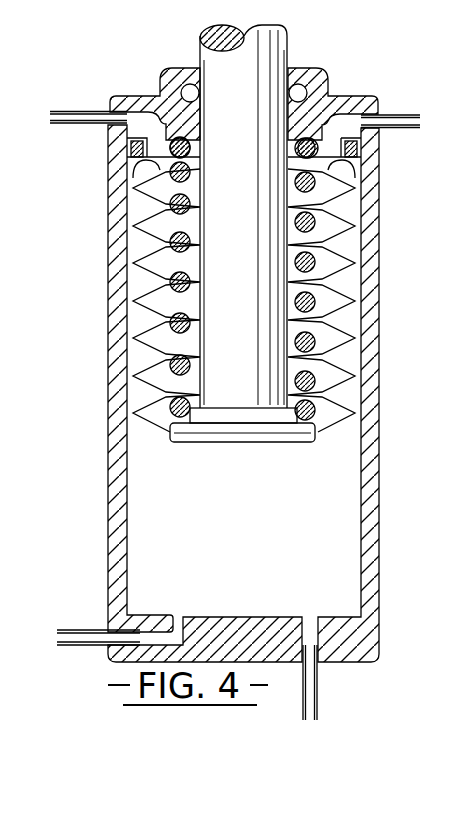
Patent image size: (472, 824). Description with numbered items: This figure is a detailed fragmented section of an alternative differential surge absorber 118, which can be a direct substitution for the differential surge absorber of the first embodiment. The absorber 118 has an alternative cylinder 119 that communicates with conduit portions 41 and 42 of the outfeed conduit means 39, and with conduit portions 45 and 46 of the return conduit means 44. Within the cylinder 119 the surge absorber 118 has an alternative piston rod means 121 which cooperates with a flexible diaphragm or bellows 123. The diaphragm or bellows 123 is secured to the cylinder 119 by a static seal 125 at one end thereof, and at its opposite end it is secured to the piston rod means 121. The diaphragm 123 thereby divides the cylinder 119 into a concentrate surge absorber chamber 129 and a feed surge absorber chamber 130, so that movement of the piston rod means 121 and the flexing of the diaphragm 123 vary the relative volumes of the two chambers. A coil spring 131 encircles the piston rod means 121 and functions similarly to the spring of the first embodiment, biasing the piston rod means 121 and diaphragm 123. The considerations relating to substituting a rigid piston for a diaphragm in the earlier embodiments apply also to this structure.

The outfeed conduit means 39 is at (71, 630).
The conduit portion 41 is at (92, 647).
The conduit portion 42 is at (318, 693).
The return conduit means 44 is at (96, 101).
The conduit portion 45 is at (394, 114).
The conduit portion 46 is at (71, 111).
The alternative differential surge absorber 118 is at (418, 198).
The alternative cylinder 119 is at (108, 460).
The alternative piston rod means 121 is at (288, 56).
The flexible diaphragm or bellows 123 is at (150, 283).
The static seal 125 is at (127, 153).
The concentrate surge absorber chamber 129 is at (135, 240).
The feed surge absorber chamber 130 is at (150, 532).
The coil spring 131 is at (130, 215).